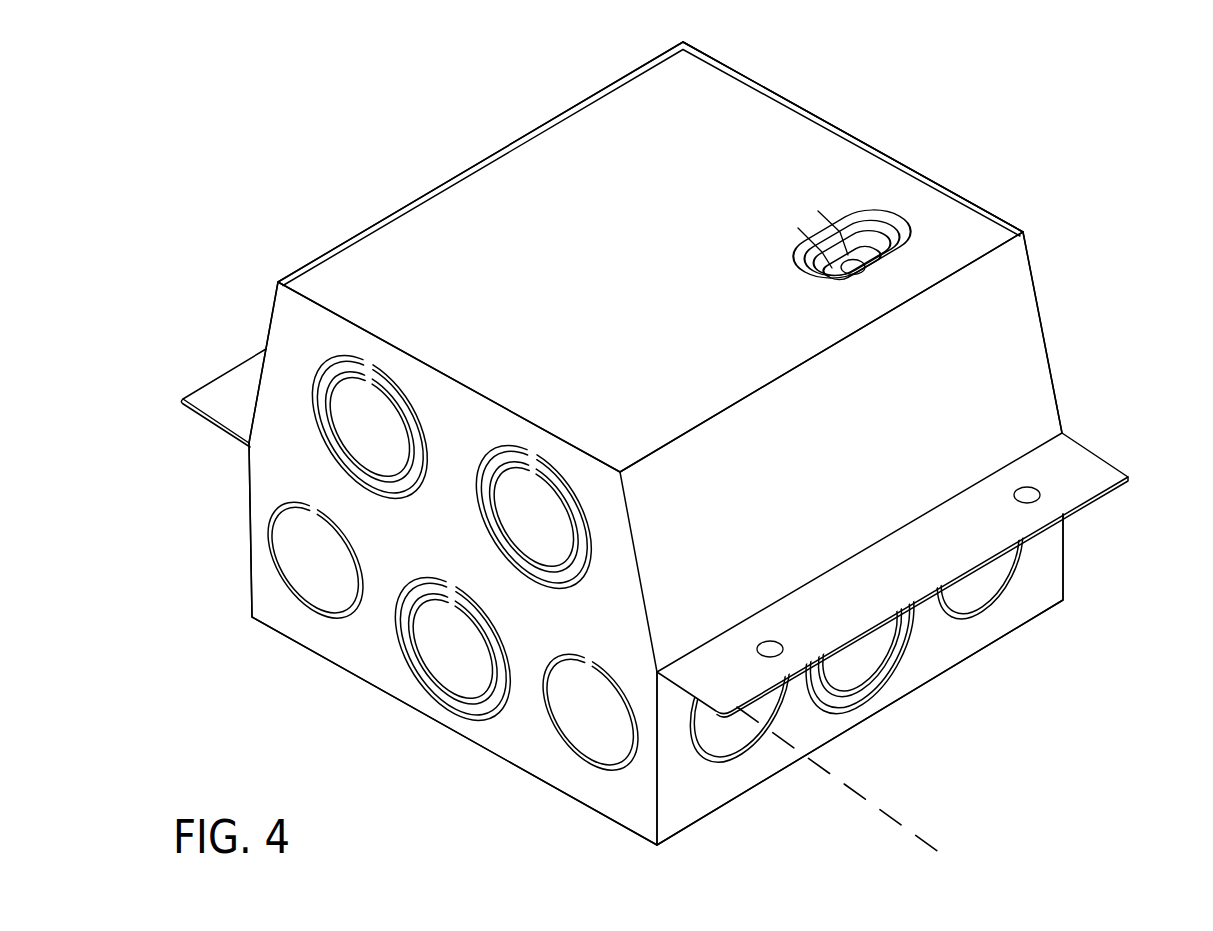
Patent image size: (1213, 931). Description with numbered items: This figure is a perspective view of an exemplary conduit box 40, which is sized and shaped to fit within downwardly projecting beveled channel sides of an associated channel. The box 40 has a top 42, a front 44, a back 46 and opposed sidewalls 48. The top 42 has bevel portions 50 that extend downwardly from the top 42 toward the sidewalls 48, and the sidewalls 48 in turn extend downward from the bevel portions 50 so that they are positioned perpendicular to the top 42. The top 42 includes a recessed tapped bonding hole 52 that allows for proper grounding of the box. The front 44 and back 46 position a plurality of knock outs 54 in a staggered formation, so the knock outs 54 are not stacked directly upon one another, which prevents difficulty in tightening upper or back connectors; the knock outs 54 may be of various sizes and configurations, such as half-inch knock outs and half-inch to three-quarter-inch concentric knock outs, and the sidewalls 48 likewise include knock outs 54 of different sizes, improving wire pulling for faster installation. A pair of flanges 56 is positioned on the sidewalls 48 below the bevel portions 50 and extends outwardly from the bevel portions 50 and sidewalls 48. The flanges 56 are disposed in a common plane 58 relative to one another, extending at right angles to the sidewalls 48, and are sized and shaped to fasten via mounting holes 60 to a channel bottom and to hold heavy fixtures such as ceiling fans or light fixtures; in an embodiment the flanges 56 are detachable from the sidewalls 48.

The conduit box 40 is at (458, 110).
The top 42 is at (364, 259).
The front 44 is at (260, 470).
The back 46 is at (955, 189).
The sidewalls 48 is at (252, 530).
The bevel portions 50 is at (273, 310).
The recessed tapped bonding hole 52 is at (873, 200).
The knock outs 54 is at (307, 607).
The flanges 56 is at (203, 398).
The common plane 58 is at (893, 814).
The mounting holes 60 is at (1033, 497).